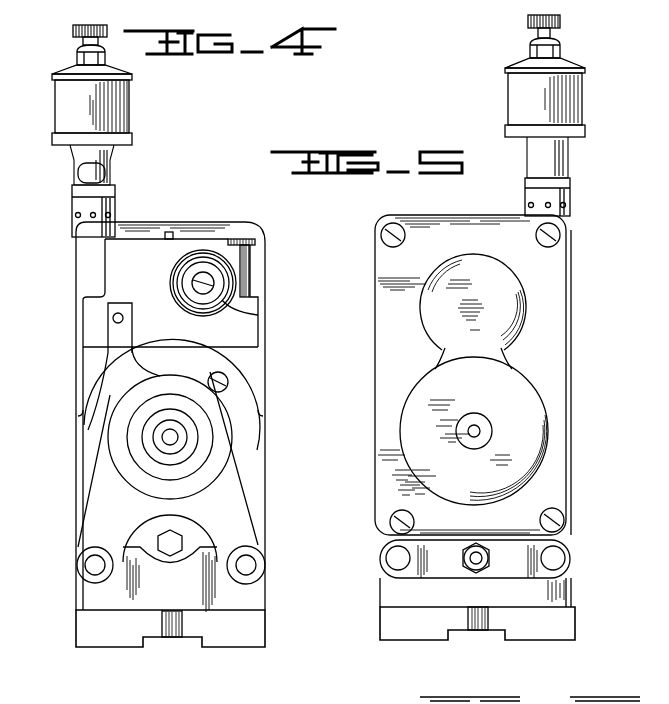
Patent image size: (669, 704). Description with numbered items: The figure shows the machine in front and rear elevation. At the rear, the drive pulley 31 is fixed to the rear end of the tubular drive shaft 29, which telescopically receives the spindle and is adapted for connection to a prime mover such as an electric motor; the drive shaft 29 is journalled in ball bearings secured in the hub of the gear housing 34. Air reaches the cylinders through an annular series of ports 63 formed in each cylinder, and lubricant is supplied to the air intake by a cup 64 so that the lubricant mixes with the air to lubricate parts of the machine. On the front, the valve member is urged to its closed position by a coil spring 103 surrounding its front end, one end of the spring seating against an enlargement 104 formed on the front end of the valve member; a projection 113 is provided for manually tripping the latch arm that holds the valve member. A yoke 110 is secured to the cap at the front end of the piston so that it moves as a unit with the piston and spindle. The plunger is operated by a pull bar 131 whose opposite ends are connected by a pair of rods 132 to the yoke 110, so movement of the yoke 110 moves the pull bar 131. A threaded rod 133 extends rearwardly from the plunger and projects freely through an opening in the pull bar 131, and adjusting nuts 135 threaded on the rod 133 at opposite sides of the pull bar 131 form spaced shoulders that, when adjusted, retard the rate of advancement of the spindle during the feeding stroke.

In FIG. 4, the cup 64 is at (62, 112).
In FIG. 5, the cup 64 is at (515, 112).
In FIG. 4, the ports 63 is at (78, 216).
In FIG. 5, the ports 63 is at (568, 205).
In FIG. 4, the enlargement 104 is at (205, 278).
In FIG. 4, the projection 113 is at (255, 285).
In FIG. 4, the coil spring 103 is at (238, 307).
In FIG. 4, the yoke 110 is at (238, 530).
In FIG. 4, the rods 132 is at (95, 565).
In FIG. 5, the rods 132 is at (395, 562).
In FIG. 5, the gear housing 34 is at (553, 275).
In FIG. 5, the drive pulley 31 is at (520, 395).
In FIG. 5, the drive shaft 29 is at (490, 426).
In FIG. 5, the pull bar 131 is at (430, 570).
In FIG. 5, the adjusting nuts 135 is at (476, 565).
In FIG. 5, the threaded rod 133 is at (484, 564).